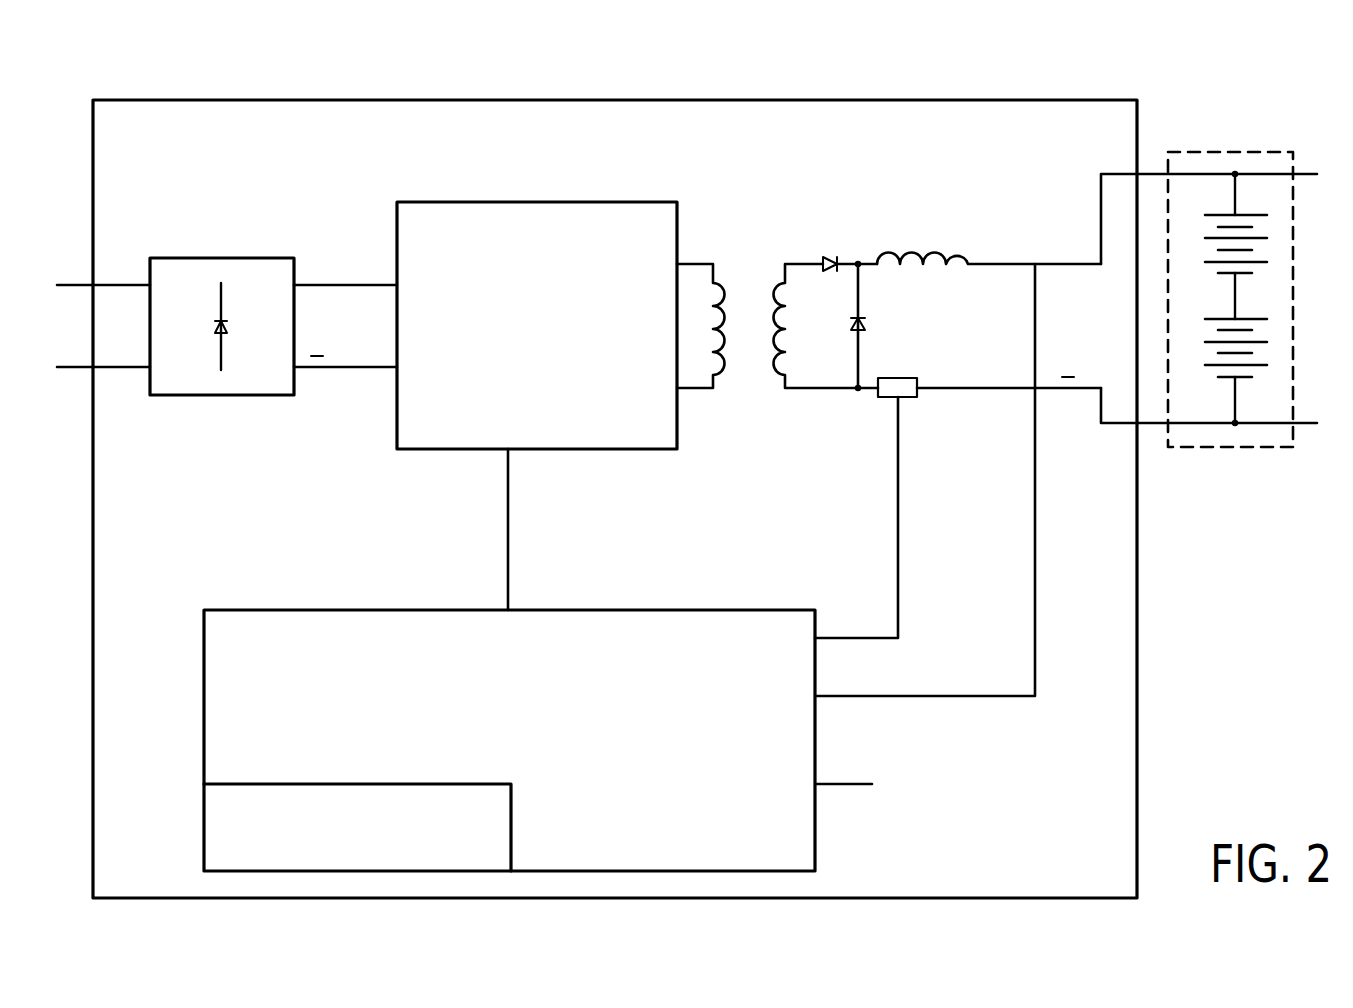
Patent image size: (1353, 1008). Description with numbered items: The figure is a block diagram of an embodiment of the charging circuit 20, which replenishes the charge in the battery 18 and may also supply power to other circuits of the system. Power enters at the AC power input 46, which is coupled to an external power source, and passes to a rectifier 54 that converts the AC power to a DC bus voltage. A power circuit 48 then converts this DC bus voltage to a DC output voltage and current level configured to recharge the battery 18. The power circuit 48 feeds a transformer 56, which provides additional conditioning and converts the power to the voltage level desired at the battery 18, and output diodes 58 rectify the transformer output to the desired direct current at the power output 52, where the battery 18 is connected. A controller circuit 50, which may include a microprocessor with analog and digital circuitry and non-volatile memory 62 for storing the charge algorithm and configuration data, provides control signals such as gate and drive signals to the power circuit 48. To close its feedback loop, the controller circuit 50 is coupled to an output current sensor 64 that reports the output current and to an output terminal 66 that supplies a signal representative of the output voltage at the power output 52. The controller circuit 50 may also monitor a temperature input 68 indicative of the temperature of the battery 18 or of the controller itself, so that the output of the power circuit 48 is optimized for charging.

The battery 18 is at (1207, 187).
The charging circuit 20 is at (272, 84).
The AC power input 46 is at (72, 283).
The power circuit 48 is at (527, 280).
The controller circuit 50 is at (495, 682).
The power output 52 is at (1088, 256).
The rectifier 54 is at (163, 337).
The transformer 56 is at (718, 292).
The output diodes 58 is at (826, 262).
The non-volatile memory 62 is at (356, 784).
The output current sensor 64 is at (896, 377).
The output terminal 66 is at (1036, 263).
The temperature input 68 is at (844, 784).